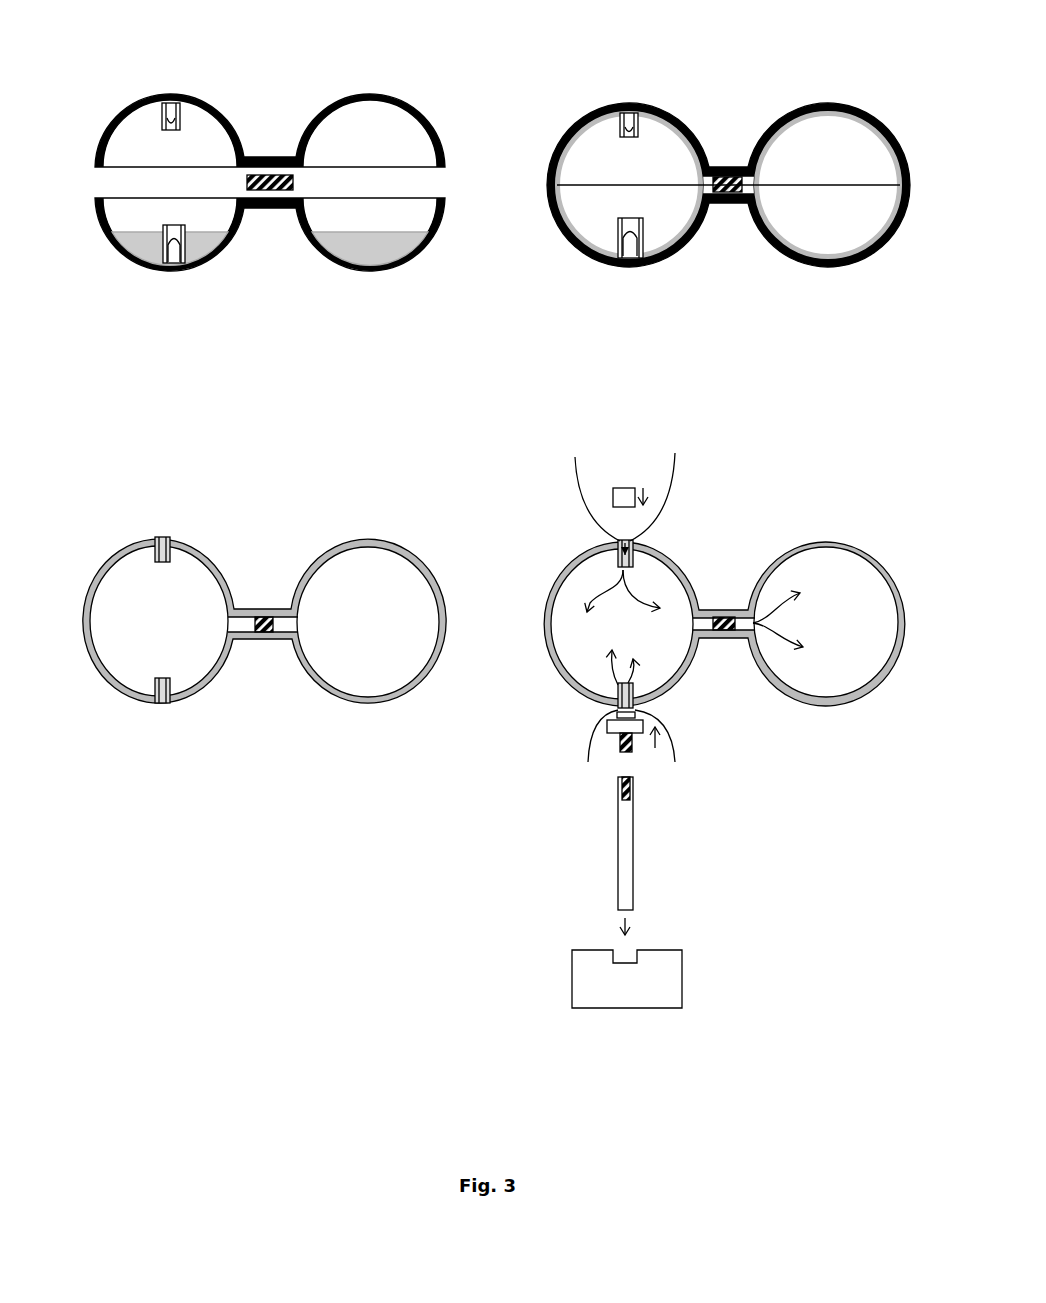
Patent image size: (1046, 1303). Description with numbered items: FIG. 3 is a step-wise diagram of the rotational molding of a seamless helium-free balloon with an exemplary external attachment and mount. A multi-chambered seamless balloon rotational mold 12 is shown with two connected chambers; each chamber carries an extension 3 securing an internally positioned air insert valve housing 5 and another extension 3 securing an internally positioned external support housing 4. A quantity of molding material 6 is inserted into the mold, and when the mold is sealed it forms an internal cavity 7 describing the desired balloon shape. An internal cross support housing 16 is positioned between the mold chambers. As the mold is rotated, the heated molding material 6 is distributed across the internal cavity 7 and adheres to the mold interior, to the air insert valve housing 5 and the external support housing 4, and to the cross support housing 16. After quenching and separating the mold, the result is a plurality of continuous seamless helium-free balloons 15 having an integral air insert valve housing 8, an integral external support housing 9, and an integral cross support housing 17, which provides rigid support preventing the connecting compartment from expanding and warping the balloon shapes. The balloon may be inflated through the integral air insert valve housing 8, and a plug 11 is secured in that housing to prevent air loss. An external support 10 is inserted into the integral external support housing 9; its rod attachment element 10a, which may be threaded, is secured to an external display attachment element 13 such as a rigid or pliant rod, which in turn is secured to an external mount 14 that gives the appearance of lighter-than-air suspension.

The extension 3 is at (163, 107).
The internally positioned external support housing 4 is at (162, 240).
The internally positioned air insert valve housing 5 is at (178, 118).
The molding material 6 is at (198, 247).
The internal cavity 7 is at (825, 158).
The integral air insert valve housing 8 is at (165, 548).
The integral external support housing 9 is at (160, 688).
The external support 10 is at (623, 728).
The rod attachment element 10a is at (873, 238).
The plug 11 is at (625, 497).
The multi-chambered seamless balloon rotational mold 12 is at (425, 80).
The external display attachment element 13 is at (628, 865).
The external mount 14 is at (592, 977).
The continuous seamless helium-free balloons 15 is at (385, 545).
The internal cross support housing 16 is at (273, 160).
The integral cross support housing 17 is at (267, 620).